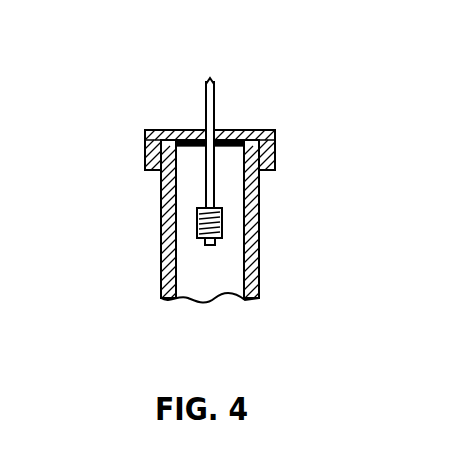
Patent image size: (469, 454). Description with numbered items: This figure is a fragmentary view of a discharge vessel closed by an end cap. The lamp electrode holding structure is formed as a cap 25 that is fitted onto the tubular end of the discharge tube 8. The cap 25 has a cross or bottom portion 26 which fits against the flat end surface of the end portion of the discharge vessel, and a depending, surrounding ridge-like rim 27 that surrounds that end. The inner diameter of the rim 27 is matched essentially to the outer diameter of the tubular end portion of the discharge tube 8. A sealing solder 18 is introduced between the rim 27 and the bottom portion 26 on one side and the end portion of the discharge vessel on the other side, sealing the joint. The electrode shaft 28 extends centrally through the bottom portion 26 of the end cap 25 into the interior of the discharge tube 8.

The discharge tube 8 is at (252, 273).
The sealing solder 18 is at (155, 158).
The cap 25 is at (229, 104).
The bottom portion 26 is at (232, 130).
The rim 27 is at (275, 155).
The electrode shaft 28 is at (205, 155).